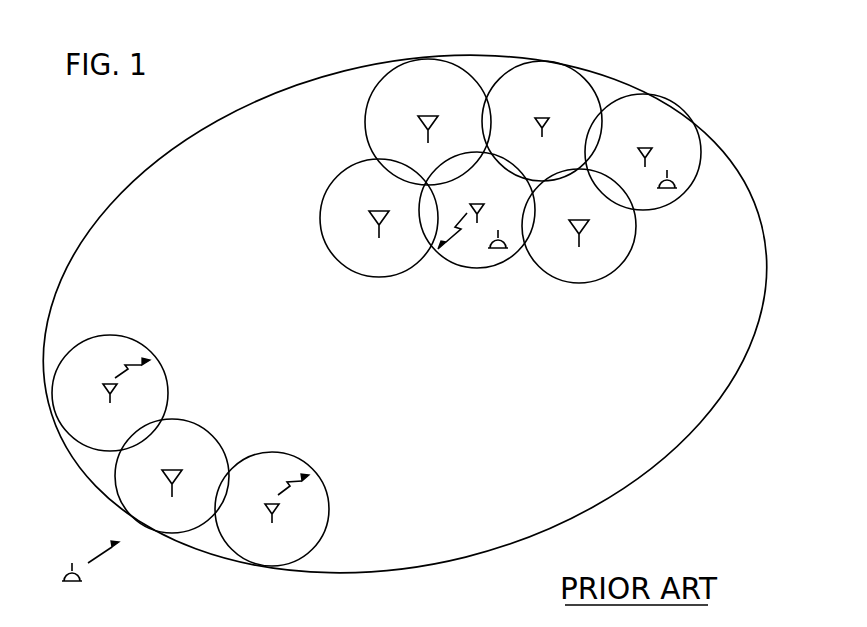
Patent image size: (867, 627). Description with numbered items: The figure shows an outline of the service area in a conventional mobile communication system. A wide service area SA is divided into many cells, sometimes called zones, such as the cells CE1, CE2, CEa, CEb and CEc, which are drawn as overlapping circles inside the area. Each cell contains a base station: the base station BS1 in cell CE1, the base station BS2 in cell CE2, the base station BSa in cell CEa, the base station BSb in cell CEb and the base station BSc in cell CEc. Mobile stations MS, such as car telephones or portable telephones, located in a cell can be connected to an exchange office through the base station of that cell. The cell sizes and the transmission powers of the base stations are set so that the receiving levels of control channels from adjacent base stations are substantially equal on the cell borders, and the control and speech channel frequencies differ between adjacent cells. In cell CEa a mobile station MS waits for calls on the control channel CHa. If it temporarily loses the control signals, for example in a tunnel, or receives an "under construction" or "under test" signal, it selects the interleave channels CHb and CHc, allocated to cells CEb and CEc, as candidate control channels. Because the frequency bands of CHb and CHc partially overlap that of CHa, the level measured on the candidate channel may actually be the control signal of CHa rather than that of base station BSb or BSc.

The service area SA is at (602, 503).
The cell CE1 is at (658, 210).
The cell CE2 is at (592, 88).
The cell CEa is at (442, 257).
The cell CEb is at (328, 512).
The cell CEc is at (92, 337).
The base station BS1 is at (643, 145).
The base station BS2 is at (538, 116).
The base station BSa is at (479, 202).
The base station BSb is at (277, 509).
The base station BSc is at (102, 392).
The control channel CHa is at (464, 238).
The interleave channel CHb is at (275, 479).
The interleave channel CHc is at (119, 361).
The mobile station MS is at (677, 186).